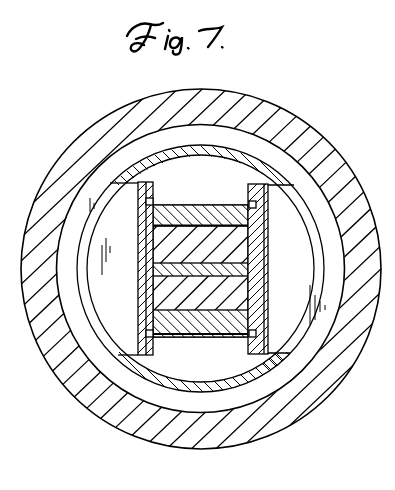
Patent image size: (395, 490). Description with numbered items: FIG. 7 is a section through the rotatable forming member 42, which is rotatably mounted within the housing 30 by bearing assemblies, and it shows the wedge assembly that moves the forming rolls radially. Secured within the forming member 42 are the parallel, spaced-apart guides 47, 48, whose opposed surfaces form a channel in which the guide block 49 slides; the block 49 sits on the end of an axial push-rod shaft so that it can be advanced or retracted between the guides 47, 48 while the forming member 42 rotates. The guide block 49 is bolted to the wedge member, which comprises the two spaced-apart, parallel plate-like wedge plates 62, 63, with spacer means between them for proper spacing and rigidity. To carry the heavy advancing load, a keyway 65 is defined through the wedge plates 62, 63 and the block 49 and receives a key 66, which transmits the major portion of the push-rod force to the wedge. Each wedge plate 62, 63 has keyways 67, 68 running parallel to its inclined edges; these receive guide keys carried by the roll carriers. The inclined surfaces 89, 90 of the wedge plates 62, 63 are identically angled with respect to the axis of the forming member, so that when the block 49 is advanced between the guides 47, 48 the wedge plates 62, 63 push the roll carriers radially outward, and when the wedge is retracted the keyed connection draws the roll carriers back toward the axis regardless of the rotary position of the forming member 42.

The housing 30 is at (288, 122).
The rotatable forming member 42 is at (180, 162).
The guide 47 is at (213, 212).
The guide 48 is at (217, 322).
The guide block 49 is at (233, 293).
The wedge plate 62 is at (262, 250).
The wedge plate 63 is at (140, 297).
The keyway 65 is at (139, 268).
The key 66 is at (172, 267).
The keyway 67 is at (146, 203).
The keyway 68 is at (146, 333).
The inclined surface 89 is at (153, 349).
The inclined surface 90 is at (153, 184).